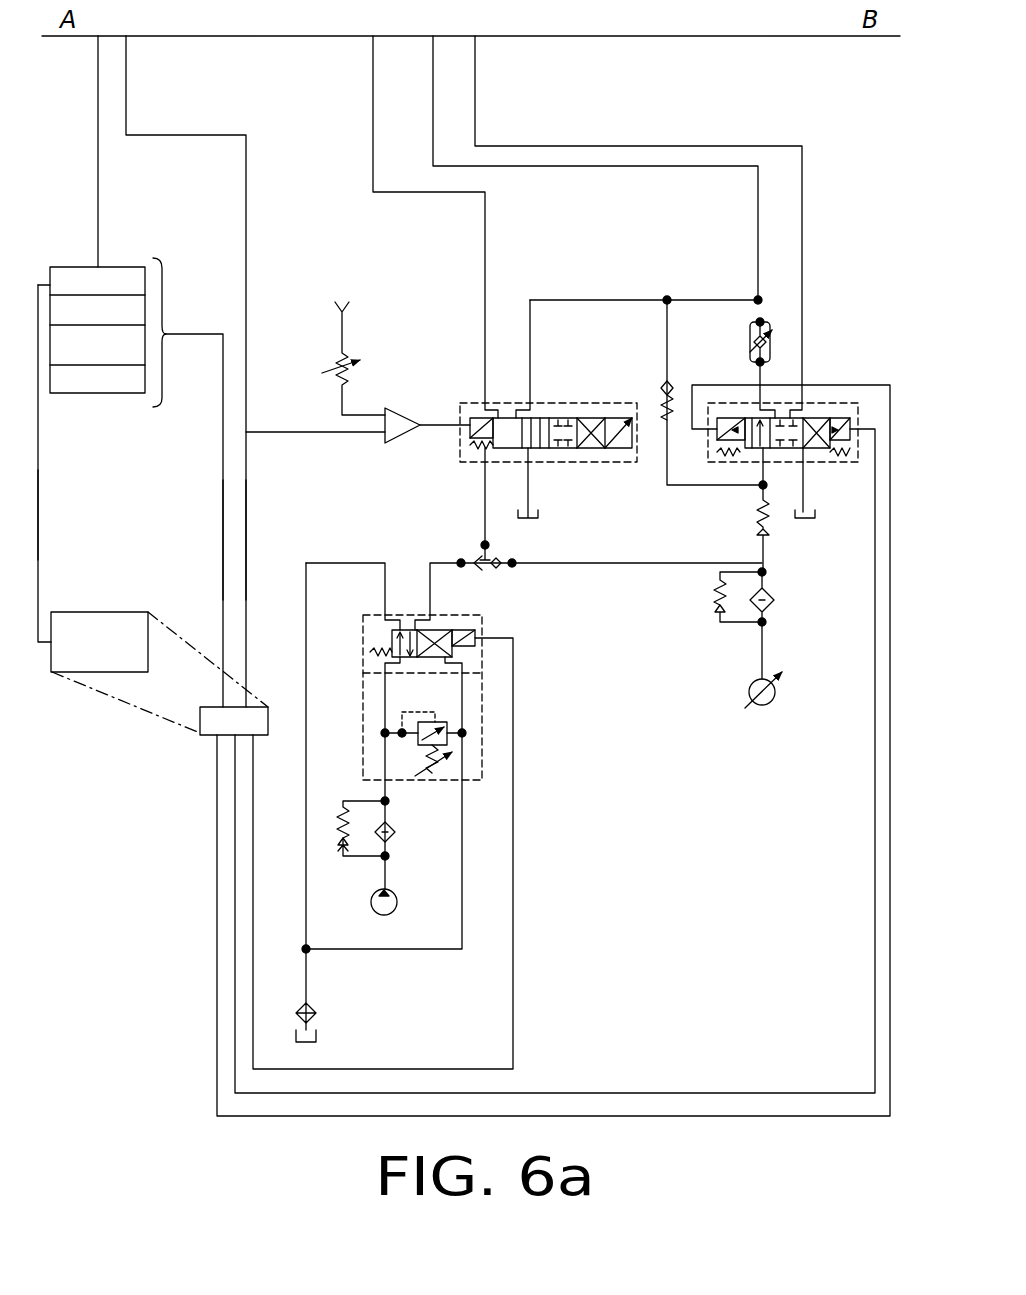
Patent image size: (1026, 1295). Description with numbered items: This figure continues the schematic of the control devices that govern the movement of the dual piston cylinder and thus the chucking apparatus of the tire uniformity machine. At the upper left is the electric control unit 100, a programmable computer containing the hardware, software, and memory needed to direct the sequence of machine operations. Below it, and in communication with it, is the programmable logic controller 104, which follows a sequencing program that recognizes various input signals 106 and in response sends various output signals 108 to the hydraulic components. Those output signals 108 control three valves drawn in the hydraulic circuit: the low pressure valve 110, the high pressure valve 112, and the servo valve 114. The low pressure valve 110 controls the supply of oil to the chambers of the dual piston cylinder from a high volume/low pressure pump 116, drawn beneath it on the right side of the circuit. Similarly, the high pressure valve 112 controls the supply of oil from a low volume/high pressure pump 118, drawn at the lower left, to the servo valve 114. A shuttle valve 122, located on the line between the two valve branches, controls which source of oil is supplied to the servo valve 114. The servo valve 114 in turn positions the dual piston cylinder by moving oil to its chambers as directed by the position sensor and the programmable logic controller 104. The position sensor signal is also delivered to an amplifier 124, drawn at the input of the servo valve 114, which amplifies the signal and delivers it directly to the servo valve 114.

The electric control unit 100 is at (76, 275).
The programmable logic controller 104 is at (217, 712).
The input signals 106 is at (38, 508).
The output signals 108 is at (253, 850).
The low pressure valve 110 is at (820, 378).
The high pressure valve 112 is at (490, 632).
The servo valve 114 is at (450, 412).
The high volume/low pressure pump 116 is at (757, 706).
The low volume/high pressure pump 118 is at (384, 915).
The shuttle valve 122 is at (500, 557).
The amplifier 124 is at (397, 440).